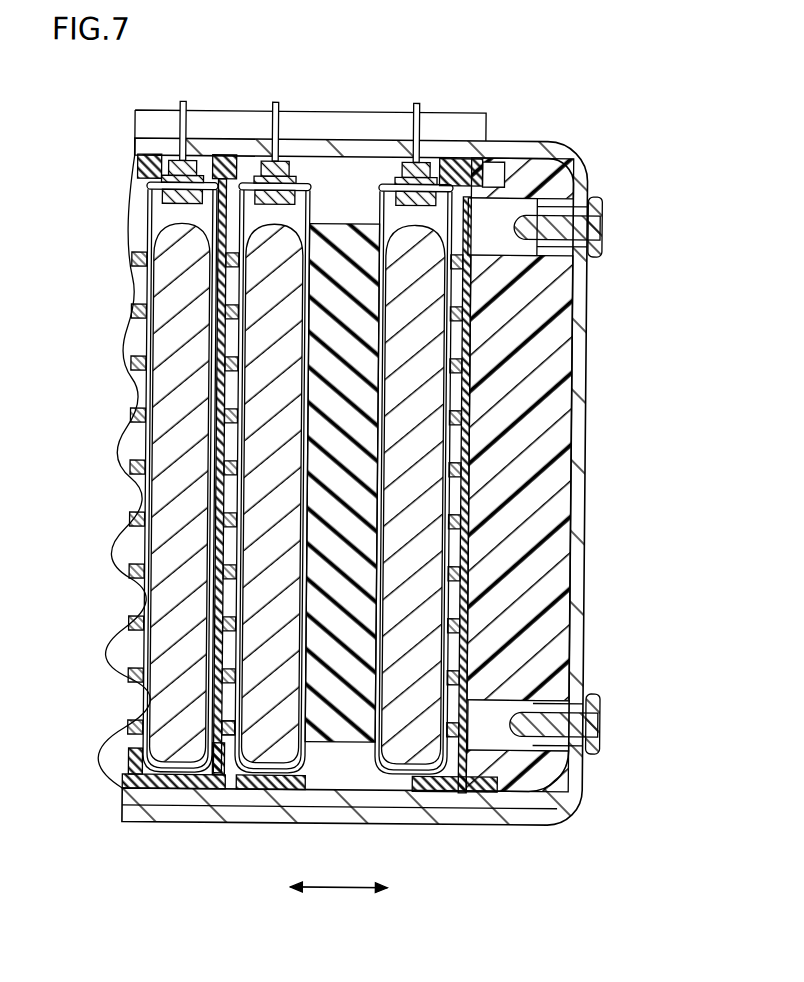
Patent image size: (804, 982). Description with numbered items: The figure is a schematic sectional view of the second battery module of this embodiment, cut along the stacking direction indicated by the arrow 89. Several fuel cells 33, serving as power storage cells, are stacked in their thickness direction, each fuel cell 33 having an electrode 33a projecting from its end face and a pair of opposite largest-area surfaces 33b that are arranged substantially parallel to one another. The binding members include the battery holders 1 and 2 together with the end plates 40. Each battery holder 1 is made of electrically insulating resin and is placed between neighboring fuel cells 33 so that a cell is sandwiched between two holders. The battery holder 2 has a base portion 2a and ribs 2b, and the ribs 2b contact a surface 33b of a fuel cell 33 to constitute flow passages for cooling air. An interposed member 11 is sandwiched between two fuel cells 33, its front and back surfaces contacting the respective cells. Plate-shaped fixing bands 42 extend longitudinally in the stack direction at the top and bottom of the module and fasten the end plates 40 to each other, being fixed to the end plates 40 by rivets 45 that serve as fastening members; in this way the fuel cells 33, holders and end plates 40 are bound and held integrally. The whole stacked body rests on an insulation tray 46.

The battery holder 1 is at (454, 794).
The battery holder 2 is at (153, 784).
The base portion 2a is at (220, 757).
The ribs 2b is at (236, 729).
The interposed member 11 is at (359, 744).
The fuel cell 33 is at (150, 754).
The electrode 33a is at (180, 125).
The surface 33b is at (226, 204).
The end plate 40 is at (541, 447).
The fixing band 42 is at (514, 148).
The rivet 45 is at (601, 225).
The insulation tray 46 is at (505, 807).
The arrow 89 is at (339, 890).